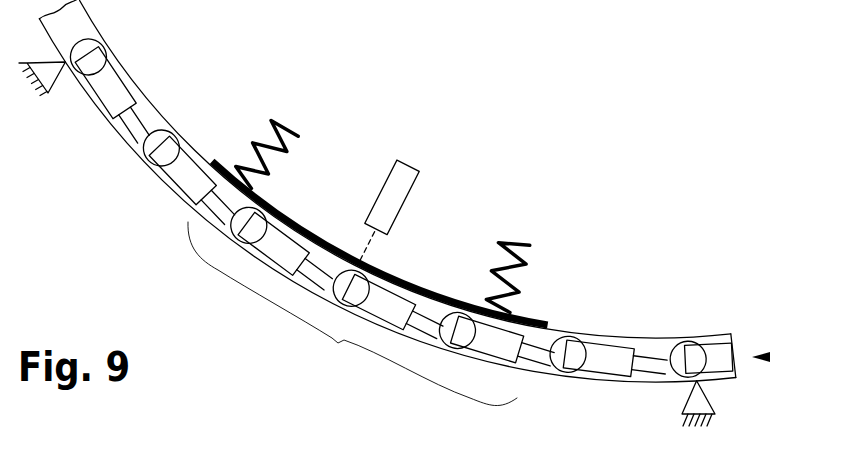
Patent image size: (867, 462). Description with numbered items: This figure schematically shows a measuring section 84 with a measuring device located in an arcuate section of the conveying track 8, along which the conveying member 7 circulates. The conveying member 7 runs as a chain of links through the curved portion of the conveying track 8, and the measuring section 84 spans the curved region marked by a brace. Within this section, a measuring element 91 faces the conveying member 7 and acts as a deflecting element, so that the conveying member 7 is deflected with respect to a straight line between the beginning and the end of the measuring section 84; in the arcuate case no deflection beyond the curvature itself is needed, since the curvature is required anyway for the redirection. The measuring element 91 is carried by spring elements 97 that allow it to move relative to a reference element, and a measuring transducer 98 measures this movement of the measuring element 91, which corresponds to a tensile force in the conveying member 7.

The conveying member 7 is at (770, 357).
The conveying track 8 is at (160, 103).
The measuring section 84 is at (352, 314).
The measuring element 91 is at (410, 281).
The spring element 97 is at (277, 157).
The measuring transducer 98 is at (398, 191).